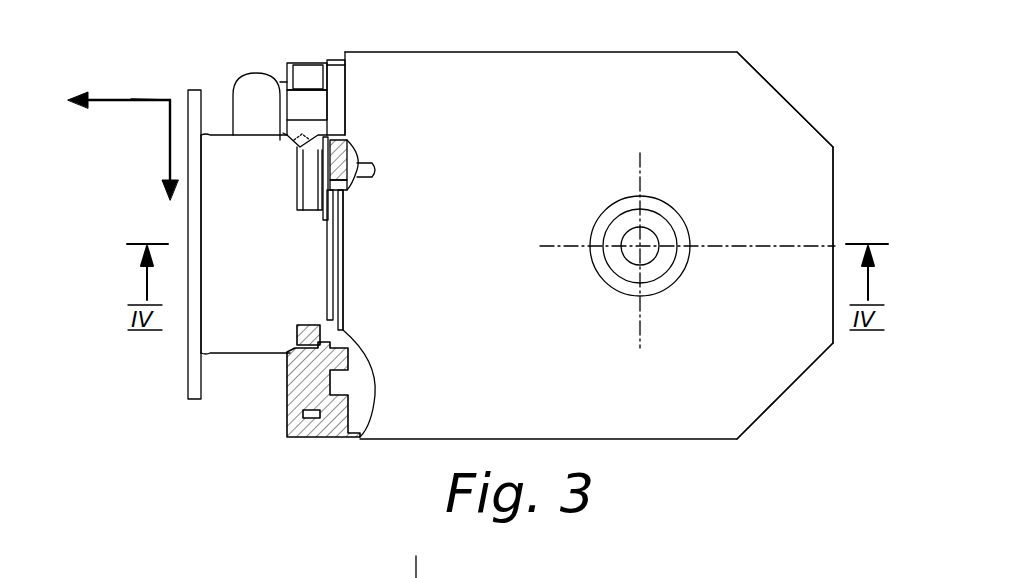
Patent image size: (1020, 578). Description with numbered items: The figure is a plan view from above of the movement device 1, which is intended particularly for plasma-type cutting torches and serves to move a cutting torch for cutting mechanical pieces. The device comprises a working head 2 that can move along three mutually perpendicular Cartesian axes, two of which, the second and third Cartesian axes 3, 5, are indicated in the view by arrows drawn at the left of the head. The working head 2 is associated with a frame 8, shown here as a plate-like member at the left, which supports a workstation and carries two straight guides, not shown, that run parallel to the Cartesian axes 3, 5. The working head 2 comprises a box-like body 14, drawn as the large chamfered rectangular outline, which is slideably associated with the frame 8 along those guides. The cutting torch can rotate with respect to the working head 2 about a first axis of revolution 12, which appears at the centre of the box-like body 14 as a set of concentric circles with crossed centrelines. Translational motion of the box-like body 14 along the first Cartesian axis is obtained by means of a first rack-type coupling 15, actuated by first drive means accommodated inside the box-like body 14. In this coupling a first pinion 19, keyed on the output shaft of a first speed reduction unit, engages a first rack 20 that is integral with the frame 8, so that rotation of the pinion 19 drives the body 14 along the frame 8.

The movement device 1 is at (785, 428).
The working head 2 is at (845, 200).
The Cartesian axis 3 is at (131, 99).
The Cartesian axis 5 is at (166, 143).
The frame 8 is at (186, 226).
The first axis of revolution 12 is at (643, 247).
The box-like body 14 is at (758, 113).
The first rack-type coupling 15 is at (322, 130).
The first pinion 19 is at (310, 195).
The first rack 20 is at (307, 145).